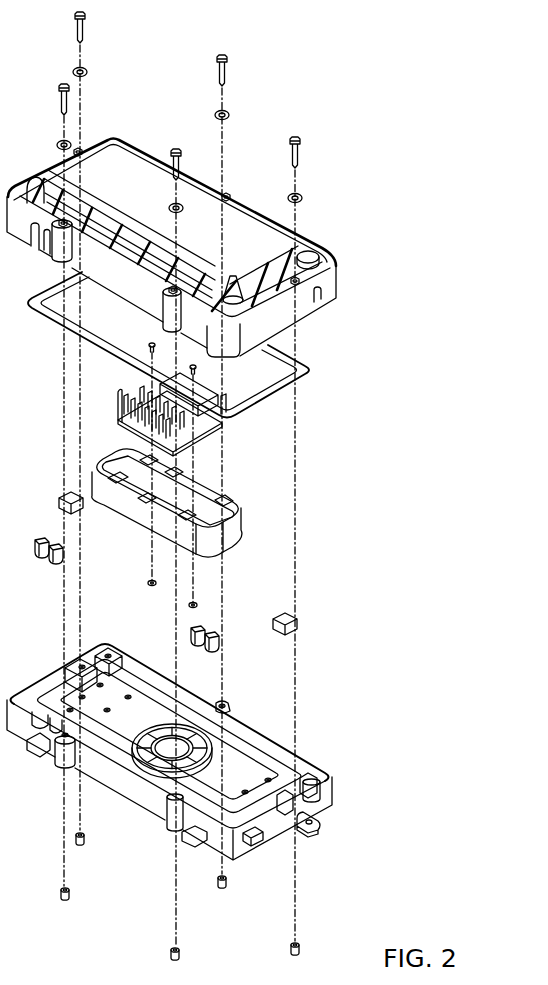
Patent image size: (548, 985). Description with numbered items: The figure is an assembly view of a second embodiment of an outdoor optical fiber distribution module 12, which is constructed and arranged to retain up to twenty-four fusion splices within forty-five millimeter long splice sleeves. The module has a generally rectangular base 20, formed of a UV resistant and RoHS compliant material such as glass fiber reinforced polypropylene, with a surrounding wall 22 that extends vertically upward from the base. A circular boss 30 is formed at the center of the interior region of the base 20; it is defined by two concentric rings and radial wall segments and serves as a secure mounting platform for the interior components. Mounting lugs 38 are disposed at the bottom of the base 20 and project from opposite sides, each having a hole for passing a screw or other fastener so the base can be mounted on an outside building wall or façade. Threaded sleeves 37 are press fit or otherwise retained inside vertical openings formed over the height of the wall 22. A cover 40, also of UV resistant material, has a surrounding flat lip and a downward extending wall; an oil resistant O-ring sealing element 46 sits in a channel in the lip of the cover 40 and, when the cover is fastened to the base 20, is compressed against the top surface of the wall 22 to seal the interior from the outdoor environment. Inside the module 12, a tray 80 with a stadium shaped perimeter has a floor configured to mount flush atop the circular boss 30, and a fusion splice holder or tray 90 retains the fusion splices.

The outdoor optical fiber distribution module 12 is at (442, 452).
The base 20 is at (313, 763).
The surrounding wall 22 is at (128, 792).
The circular boss 30 is at (212, 756).
The threaded sleeves 37 is at (70, 890).
The mounting lugs 38 is at (318, 832).
The cover 40 is at (122, 155).
The O-ring sealing element 46 is at (303, 390).
The tray 80 is at (247, 558).
The fusion splice holder 90 is at (222, 443).